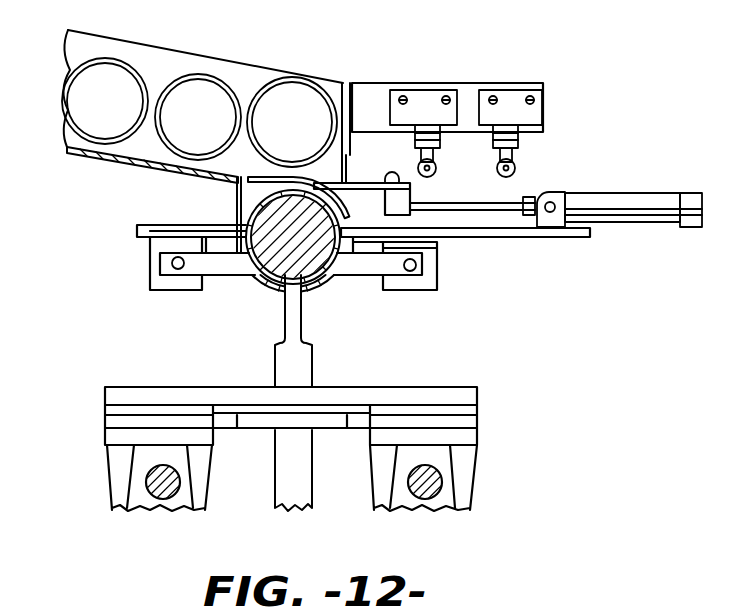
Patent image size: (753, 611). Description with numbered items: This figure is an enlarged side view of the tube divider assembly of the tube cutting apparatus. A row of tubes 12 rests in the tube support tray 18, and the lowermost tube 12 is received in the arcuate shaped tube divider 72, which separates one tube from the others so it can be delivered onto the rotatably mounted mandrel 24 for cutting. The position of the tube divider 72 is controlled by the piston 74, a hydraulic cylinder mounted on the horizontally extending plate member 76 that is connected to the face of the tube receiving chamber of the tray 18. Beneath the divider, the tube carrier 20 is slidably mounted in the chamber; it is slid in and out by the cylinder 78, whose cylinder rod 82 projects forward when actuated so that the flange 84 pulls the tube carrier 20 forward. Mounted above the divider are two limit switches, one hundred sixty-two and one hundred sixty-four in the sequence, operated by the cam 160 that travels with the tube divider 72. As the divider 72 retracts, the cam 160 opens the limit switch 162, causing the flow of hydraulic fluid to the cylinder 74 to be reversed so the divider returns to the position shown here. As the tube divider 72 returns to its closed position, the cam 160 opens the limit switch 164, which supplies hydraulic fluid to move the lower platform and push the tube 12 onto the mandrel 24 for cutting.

The tube 12 is at (297, 88).
The tube support tray 18 is at (133, 163).
The tube carrier 20 is at (318, 290).
The mandrel 24 is at (277, 298).
The tube divider 72 is at (320, 176).
The piston 74 is at (616, 200).
The plate member 76 is at (517, 237).
The cylinder 78 is at (433, 268).
The cylinder rod 82 is at (413, 270).
The flange 84 is at (365, 268).
The cam 160 is at (405, 172).
The limit switch 162 is at (512, 97).
The limit switch 164 is at (422, 97).